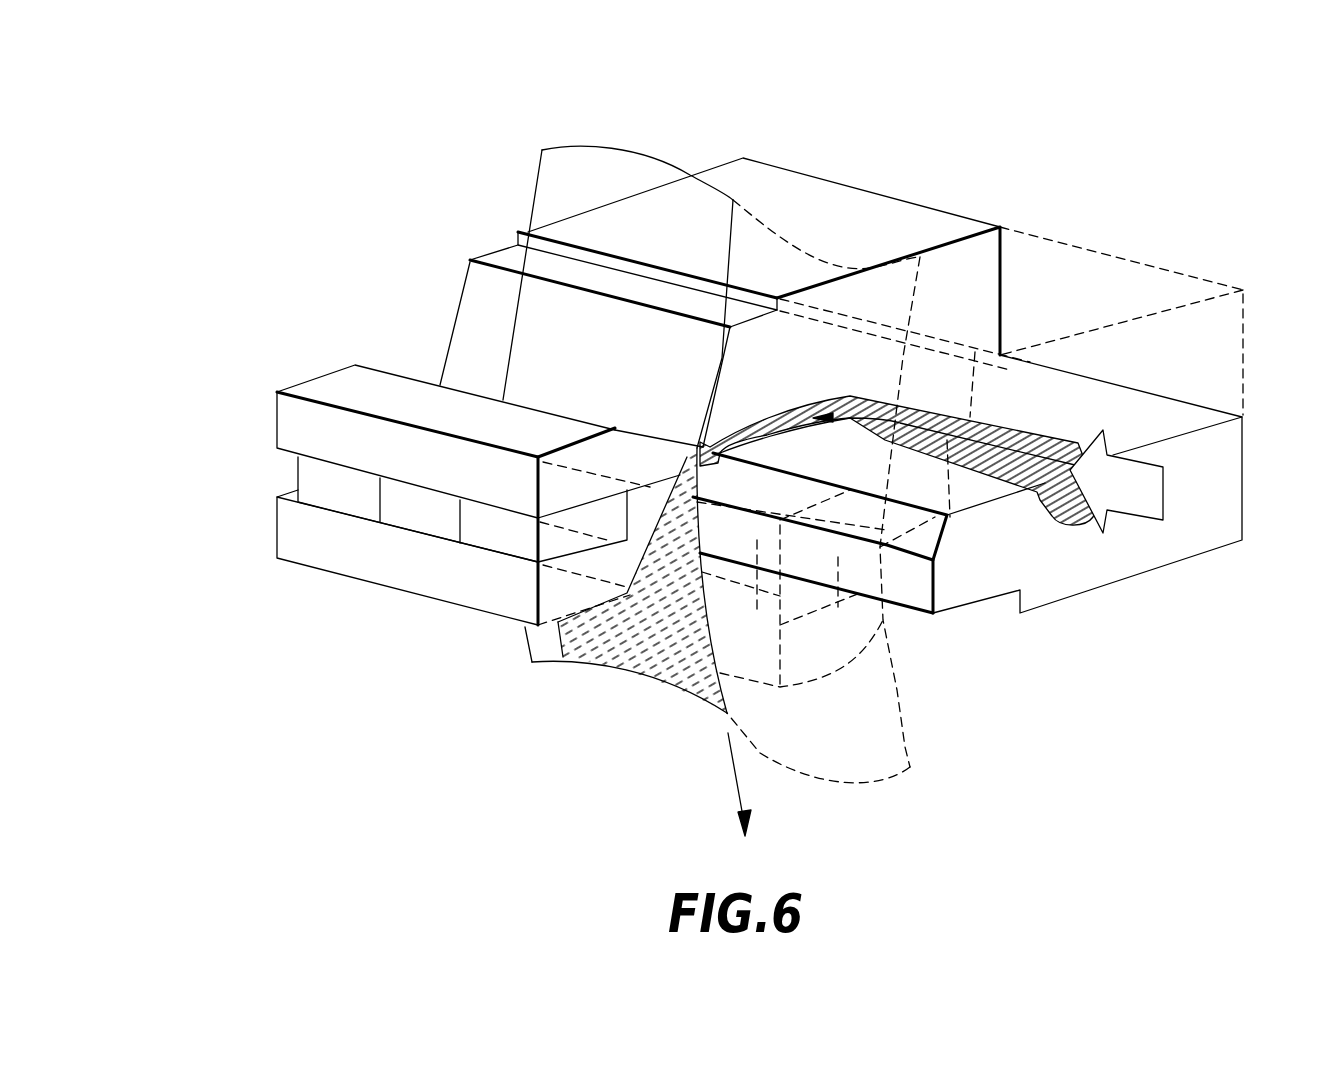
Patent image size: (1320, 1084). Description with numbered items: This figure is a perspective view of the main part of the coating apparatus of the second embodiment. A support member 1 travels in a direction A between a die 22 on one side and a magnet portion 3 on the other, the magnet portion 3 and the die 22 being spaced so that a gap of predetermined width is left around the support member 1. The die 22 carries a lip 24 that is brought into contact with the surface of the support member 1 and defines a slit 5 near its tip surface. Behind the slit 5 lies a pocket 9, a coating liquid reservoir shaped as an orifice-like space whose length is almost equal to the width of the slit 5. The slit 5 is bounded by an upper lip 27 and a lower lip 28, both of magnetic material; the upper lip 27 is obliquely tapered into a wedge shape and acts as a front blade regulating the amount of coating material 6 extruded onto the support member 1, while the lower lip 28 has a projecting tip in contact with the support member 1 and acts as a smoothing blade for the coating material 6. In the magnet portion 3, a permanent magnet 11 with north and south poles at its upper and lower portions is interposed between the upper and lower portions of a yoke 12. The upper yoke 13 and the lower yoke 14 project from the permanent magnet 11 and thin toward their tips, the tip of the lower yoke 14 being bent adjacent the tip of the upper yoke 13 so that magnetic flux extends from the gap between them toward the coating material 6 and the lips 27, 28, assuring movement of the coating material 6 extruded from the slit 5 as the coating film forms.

The support member 1 is at (608, 157).
The magnet portion 3 is at (418, 477).
The slit 5 is at (760, 436).
The coating material 6 is at (1003, 493).
The pocket 9 is at (1083, 527).
The permanent magnet 11 is at (483, 543).
The yoke 12 is at (277, 425).
The upper yoke 13 is at (352, 372).
The lower yoke 14 is at (485, 603).
The die 22 is at (983, 194).
The lip 24 is at (497, 253).
The upper lip 27 is at (467, 308).
The lower lip 28 is at (978, 593).
The direction A is at (726, 784).